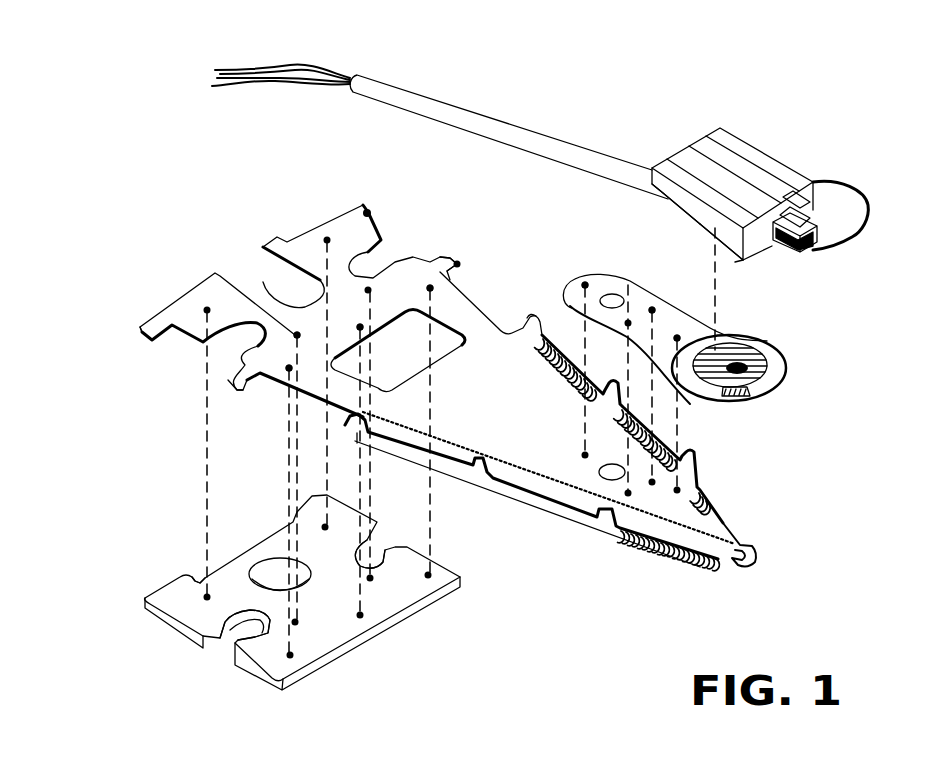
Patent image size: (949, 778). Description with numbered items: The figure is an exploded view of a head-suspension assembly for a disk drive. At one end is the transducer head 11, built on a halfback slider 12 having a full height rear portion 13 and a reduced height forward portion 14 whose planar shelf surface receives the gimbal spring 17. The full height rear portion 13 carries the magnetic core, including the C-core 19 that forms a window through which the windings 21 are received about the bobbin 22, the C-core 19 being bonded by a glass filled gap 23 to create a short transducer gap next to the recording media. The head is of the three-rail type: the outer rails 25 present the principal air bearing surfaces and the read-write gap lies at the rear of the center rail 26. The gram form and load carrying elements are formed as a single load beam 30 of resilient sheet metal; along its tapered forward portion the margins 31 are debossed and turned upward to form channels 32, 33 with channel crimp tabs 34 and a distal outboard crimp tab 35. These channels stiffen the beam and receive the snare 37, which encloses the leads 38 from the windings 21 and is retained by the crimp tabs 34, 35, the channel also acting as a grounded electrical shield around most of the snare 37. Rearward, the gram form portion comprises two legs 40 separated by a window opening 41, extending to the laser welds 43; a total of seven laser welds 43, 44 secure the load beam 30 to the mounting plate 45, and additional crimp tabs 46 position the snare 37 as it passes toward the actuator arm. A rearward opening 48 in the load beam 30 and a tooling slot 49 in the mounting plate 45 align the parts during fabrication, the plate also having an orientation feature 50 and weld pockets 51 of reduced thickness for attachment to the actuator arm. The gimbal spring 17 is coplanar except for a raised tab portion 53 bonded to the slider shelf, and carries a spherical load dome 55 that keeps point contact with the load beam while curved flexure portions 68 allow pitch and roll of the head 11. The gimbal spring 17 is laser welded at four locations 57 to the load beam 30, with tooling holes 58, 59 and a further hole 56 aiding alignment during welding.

The transducer head 11 is at (763, 152).
The halfback slider 12 is at (700, 223).
The full height rear portion 13 is at (738, 262).
The reduced height forward portion 14 is at (663, 193).
The gimbal spring 17 is at (597, 272).
The C-core 19 is at (793, 197).
The windings 21 is at (780, 253).
The bobbin 22 is at (800, 252).
The glass filled gap 23 is at (787, 193).
The outer rails 25 is at (664, 158).
The center rail 26 is at (690, 148).
The load beam 30 is at (498, 322).
The margins 31 is at (503, 495).
The channel 32 is at (417, 448).
The channel 33 is at (567, 357).
The channel crimp tabs 34 is at (352, 432).
The outboard crimp tab 35 is at (763, 557).
The snare 37 is at (497, 122).
The leads 38 is at (858, 212).
The gram form legs 40 is at (452, 283).
The window opening 41 is at (355, 377).
The laser welds 43 is at (290, 368).
The laser welds 44 is at (208, 287).
The mounting plate 45 is at (377, 635).
The crimp tabs 46 is at (367, 212).
The rearward opening 48 is at (258, 296).
The tooling slot 49 is at (273, 573).
The orientation feature 50 is at (207, 580).
The weld pockets 51 is at (377, 550).
The raised tab portion 53 is at (747, 358).
The load dome 55 is at (740, 377).
The hole 56 is at (628, 283).
The laser weld locations 57 is at (615, 300).
The tooling hole 58 is at (677, 337).
The tooling hole 59 is at (598, 470).
The curved flexure portions 68 is at (767, 338).